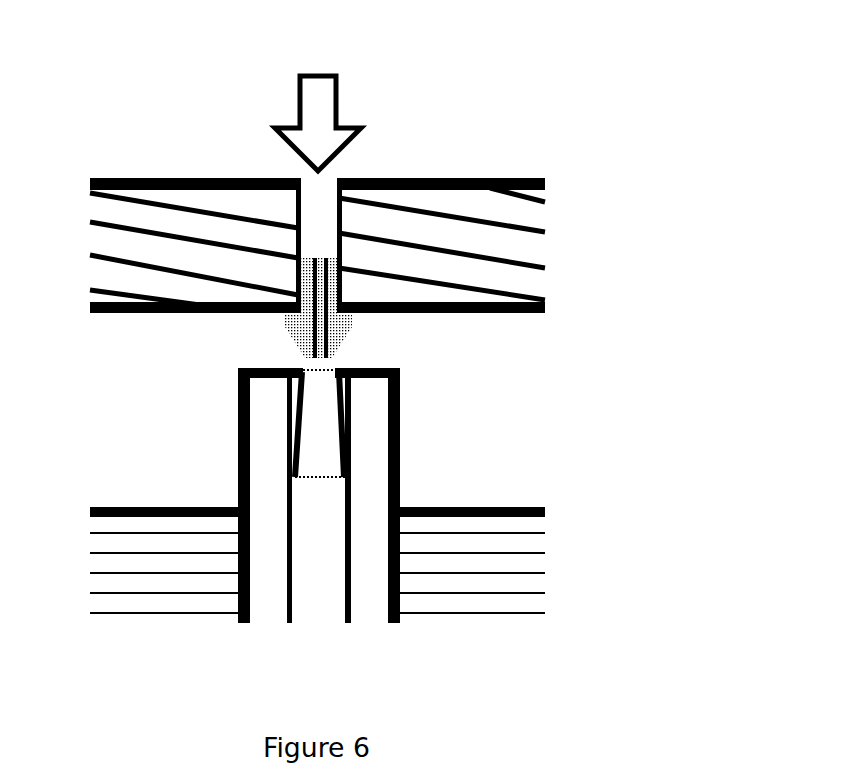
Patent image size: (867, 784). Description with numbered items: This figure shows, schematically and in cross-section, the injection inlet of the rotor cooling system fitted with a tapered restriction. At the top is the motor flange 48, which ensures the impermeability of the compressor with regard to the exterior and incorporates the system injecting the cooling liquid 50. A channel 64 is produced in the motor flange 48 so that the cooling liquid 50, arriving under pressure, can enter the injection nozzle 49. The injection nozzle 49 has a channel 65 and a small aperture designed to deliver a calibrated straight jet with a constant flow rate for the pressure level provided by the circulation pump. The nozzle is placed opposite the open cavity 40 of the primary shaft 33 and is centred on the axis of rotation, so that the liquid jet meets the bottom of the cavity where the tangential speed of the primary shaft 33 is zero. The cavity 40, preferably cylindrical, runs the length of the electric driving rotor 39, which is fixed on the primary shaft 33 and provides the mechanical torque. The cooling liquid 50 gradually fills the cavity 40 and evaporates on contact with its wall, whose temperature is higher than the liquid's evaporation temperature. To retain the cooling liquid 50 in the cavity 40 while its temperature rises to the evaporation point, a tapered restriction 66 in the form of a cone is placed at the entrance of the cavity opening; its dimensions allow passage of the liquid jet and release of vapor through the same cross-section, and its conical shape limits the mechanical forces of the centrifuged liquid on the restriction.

The cooling liquid 50 is at (318, 88).
The motor flange 48 is at (485, 242).
The channel 64 is at (313, 213).
The injection nozzle 49 is at (328, 280).
The channel 65 is at (322, 338).
The primary shaft 33 is at (267, 447).
The tapered restriction 66 is at (335, 390).
The electric driving rotor 39 is at (500, 548).
The open cavity 40 is at (313, 609).